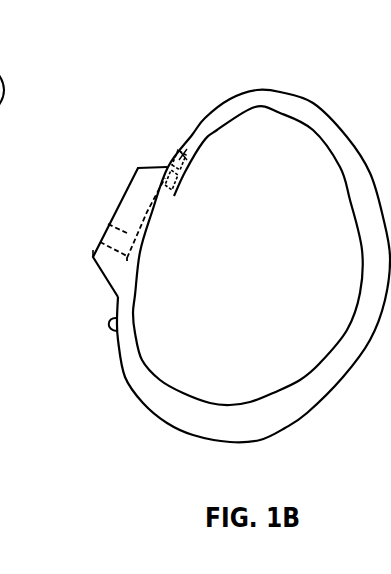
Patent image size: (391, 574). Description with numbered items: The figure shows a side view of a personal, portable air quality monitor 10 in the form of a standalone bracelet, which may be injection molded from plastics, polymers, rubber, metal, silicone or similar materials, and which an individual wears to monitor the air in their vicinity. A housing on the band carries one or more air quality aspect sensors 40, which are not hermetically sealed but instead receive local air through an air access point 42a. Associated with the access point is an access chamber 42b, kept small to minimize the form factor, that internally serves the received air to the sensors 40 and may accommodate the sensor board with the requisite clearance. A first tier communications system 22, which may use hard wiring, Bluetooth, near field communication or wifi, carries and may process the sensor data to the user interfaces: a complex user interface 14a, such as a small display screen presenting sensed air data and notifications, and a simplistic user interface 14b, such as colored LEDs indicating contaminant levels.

The personal, portable monitor 10 is at (189, 56).
The first tier communications system 22 is at (140, 237).
The air quality aspect sensors 40 is at (172, 185).
The access chamber 42b is at (182, 155).
The air access point 42a is at (11, 118).
The complex user interface 14a is at (93, 253).
The simplistic user interface 14b is at (110, 319).